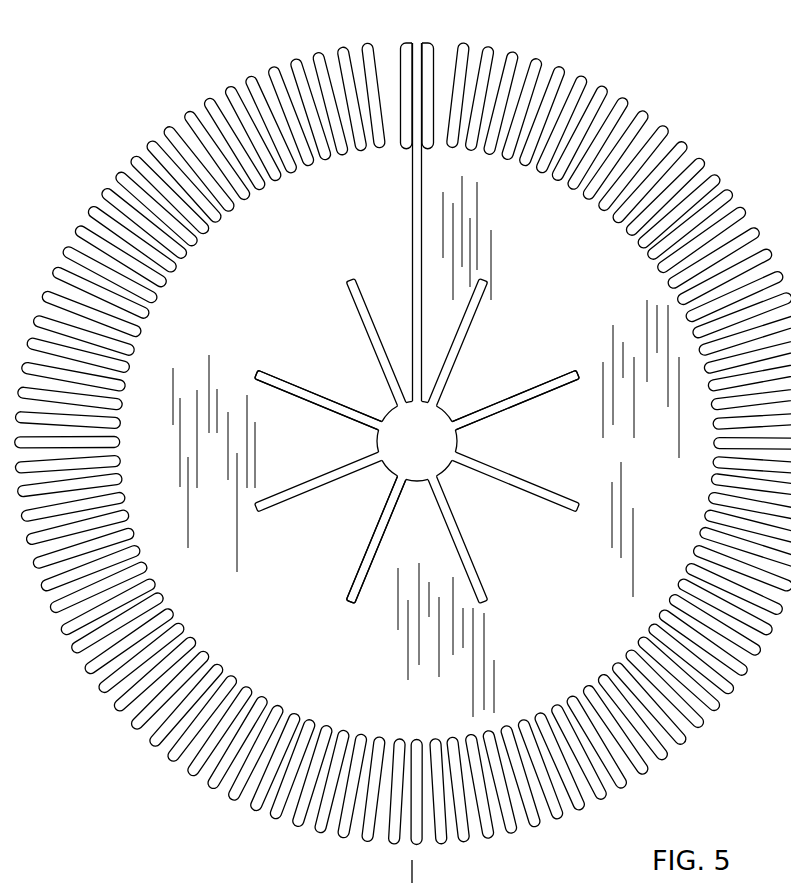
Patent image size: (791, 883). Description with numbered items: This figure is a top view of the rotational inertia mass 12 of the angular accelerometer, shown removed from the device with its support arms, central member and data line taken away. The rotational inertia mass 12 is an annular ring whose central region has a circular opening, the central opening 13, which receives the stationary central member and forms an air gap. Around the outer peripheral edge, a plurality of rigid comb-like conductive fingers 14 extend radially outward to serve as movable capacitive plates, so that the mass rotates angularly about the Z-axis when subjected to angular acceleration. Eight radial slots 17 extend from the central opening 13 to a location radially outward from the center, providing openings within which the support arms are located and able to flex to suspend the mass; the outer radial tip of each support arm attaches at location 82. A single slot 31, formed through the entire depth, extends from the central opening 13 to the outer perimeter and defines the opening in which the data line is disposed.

The rotational inertia mass 12 is at (560, 259).
The central opening 13 is at (455, 432).
The comb-like conductive fingers 14 is at (457, 50).
The radial slots 17 is at (361, 299).
The slot 31 is at (412, 191).
The attachment location 82 is at (258, 370).